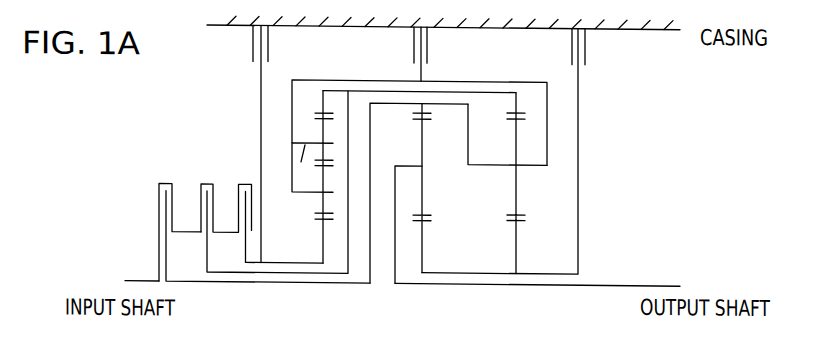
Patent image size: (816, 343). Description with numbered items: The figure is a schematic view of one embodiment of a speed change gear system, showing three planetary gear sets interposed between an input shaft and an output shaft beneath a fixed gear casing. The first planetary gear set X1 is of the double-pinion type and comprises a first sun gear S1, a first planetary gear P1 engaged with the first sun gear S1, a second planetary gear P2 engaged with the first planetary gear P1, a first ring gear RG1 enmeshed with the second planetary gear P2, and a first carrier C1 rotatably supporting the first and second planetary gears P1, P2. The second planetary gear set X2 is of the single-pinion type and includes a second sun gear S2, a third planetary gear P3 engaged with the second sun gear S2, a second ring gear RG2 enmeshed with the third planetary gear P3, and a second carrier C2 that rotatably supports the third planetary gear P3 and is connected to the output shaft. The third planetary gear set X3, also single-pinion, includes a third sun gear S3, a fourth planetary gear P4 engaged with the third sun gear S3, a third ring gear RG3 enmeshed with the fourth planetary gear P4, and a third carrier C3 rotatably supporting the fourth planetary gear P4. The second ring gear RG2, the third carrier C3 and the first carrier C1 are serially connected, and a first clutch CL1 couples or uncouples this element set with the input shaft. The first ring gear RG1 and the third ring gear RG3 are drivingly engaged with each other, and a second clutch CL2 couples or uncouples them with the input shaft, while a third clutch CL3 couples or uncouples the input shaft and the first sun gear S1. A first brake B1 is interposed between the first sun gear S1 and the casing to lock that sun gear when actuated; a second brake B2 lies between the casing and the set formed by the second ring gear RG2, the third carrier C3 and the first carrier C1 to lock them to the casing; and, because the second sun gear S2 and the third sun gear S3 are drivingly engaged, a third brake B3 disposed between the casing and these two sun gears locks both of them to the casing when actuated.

The first brake B1 is at (275, 143).
The second brake B2 is at (439, 54).
The third brake B3 is at (521, 150).
The first clutch CL1 is at (235, 219).
The second clutch CL2 is at (251, 181).
The third clutch CL3 is at (264, 209).
The first ring gear RG1 is at (322, 109).
The second ring gear RG2 is at (432, 111).
The third ring gear RG3 is at (510, 108).
The first planetary gear P1 is at (319, 199).
The second planetary gear P2 is at (326, 125).
The third planetary gear P3 is at (422, 193).
The fourth planetary gear P4 is at (516, 179).
The first carrier C1 is at (318, 190).
The second carrier C2 is at (408, 164).
The third carrier C3 is at (486, 163).
The first sun gear S1 is at (323, 238).
The second sun gear S2 is at (422, 233).
The third sun gear S3 is at (517, 232).
The first planetary gear set X1 is at (318, 227).
The second planetary gear set X2 is at (416, 229).
The third planetary gear set X3 is at (511, 229).